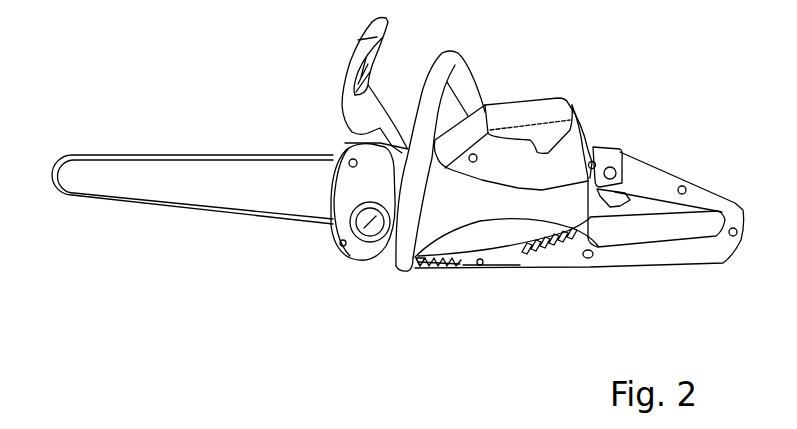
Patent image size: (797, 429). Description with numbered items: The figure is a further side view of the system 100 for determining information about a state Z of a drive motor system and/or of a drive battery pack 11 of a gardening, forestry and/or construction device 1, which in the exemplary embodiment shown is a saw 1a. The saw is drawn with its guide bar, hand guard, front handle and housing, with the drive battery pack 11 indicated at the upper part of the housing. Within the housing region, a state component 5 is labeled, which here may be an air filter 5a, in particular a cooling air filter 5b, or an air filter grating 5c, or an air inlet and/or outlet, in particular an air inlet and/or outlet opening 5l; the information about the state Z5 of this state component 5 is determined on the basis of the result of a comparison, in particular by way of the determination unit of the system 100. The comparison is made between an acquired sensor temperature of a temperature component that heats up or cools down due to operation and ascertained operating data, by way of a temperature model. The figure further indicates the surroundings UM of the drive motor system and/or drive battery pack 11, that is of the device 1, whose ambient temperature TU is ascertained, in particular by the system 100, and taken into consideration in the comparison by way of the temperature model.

The gardening, forestry and/or construction device 1 is at (383, 189).
The saw 1a is at (383, 189).
The system 100 is at (82, 137).
The drive battery pack 11 is at (537, 113).
The state component 5 is at (579, 253).
The air filter 5a is at (506, 238).
The cooling air filter 5b is at (504, 237).
The air filter grating 5c is at (549, 241).
The air inlet and/or outlet opening 5l is at (480, 262).
The state Z is at (424, 309).
The state of the state component Z5 is at (425, 270).
The ambient temperature TU is at (229, 43).
The surroundings UM is at (336, 43).